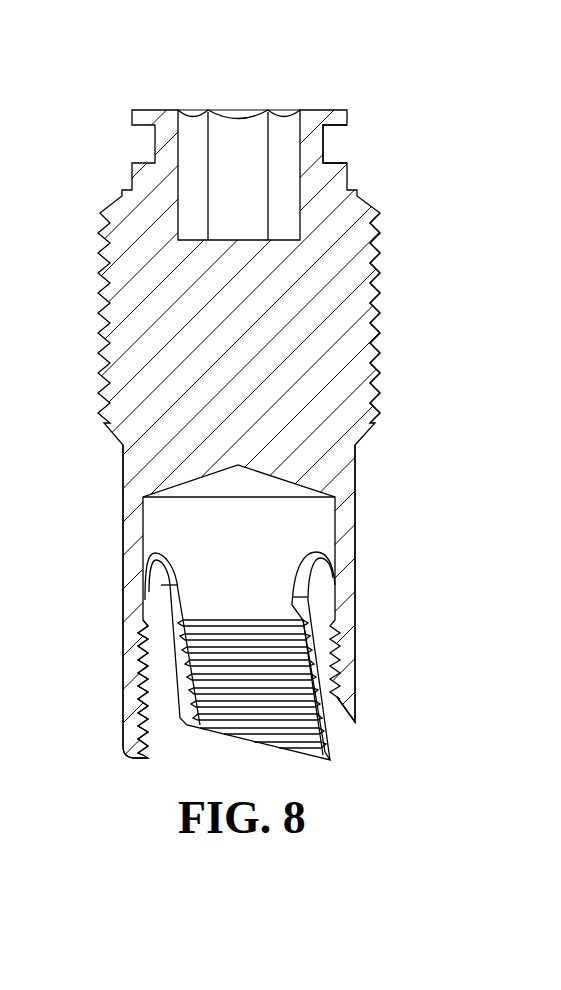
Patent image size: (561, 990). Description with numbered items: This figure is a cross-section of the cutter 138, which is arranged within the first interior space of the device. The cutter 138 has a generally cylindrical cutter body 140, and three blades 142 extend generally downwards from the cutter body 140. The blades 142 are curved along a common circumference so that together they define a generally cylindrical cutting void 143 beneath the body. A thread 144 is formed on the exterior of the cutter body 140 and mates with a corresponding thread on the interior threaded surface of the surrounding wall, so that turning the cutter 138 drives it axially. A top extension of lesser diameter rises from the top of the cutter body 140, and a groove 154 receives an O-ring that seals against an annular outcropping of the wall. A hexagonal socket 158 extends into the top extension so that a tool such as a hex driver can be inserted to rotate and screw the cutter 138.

The cutter 138 is at (136, 77).
The cutter body 140 is at (240, 392).
The blades 142 is at (128, 645).
The cutting void 143 is at (208, 598).
The thread 144 is at (378, 318).
The groove 154 is at (327, 147).
The hexagonal socket 158 is at (237, 135).